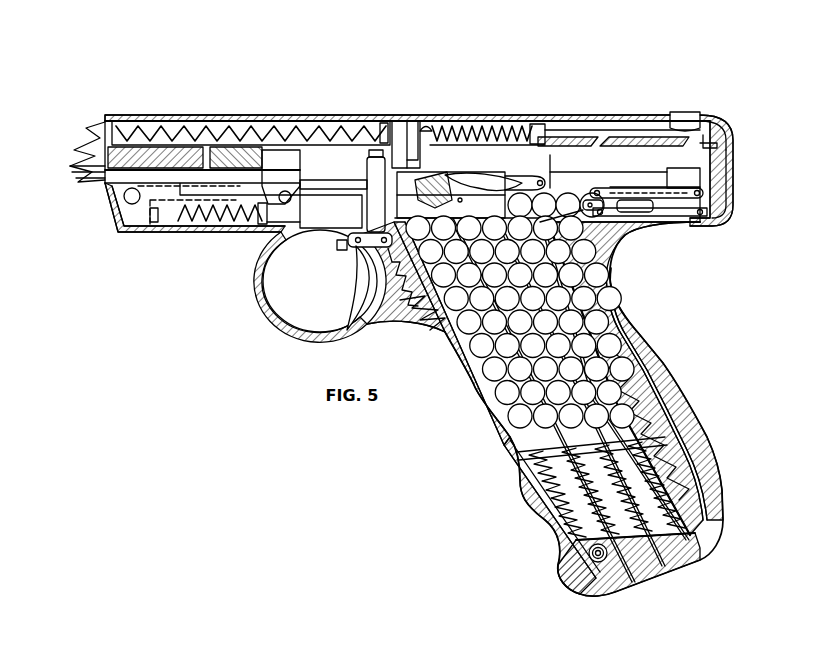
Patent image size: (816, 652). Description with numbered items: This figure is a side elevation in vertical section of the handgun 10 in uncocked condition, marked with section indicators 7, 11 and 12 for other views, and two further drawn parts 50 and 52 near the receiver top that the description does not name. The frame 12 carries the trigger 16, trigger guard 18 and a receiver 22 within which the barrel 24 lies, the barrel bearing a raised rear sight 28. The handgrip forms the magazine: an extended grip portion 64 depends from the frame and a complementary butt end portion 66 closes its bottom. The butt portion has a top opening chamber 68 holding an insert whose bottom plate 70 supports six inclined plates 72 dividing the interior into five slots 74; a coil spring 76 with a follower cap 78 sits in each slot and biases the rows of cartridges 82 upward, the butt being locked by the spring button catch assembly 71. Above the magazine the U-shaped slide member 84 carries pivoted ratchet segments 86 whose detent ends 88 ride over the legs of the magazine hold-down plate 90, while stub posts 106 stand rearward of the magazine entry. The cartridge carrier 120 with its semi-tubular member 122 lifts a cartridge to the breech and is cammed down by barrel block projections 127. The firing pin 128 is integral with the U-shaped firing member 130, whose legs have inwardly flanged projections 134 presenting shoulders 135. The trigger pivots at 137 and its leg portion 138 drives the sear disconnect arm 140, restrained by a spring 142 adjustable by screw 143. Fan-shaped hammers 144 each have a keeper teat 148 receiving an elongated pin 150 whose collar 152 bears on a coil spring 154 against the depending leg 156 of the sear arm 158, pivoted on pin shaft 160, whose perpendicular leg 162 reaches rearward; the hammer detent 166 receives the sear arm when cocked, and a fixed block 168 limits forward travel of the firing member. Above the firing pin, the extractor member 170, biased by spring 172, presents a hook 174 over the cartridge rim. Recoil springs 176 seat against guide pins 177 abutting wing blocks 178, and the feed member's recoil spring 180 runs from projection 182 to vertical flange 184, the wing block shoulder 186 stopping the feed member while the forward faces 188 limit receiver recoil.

The section line 7 is at (500, 78).
The handgun 10 is at (226, 78).
The section line 11 is at (347, 78).
The frame 12 is at (680, 78).
The trigger 16 is at (356, 286).
The trigger guard 18 is at (281, 334).
The receiver 22 is at (165, 115).
The barrel 24 is at (78, 161).
The rear sight 28 is at (600, 131).
The rear sight block 50 is at (683, 122).
The hatched guide strip 52 is at (612, 140).
The extended grip portion 64 is at (618, 324).
The butt end portion 66 is at (708, 445).
The top opening chamber 68 is at (675, 419).
The bottom plate 70 is at (660, 536).
The spring button catch assembly 71 is at (588, 558).
The plates 72 is at (636, 541).
The slots 74 is at (641, 359).
The coil spring 76 is at (656, 378).
The follower cap 78 is at (540, 448).
The cartridges 82 is at (570, 289).
The slide member 84 is at (473, 183).
The ratchet segments 86 is at (442, 178).
The detent end 88 is at (478, 188).
The magazine hold-down plate 90 is at (540, 233).
The stub posts 106 is at (628, 212).
The cartridge carrier 120 is at (710, 210).
The semi-tubular member 122 is at (697, 200).
The barrel block projections 127 is at (667, 180).
The firing pin 128 is at (667, 170).
The firing member 130 is at (732, 157).
The inwardly flanged projection 134 is at (262, 165).
The shoulder 135 is at (275, 140).
The trigger pivot 137 is at (350, 241).
The leg portion 138 is at (374, 254).
The sear disconnect arm 140 is at (368, 185).
The spring 142 is at (395, 320).
The screw 143 is at (426, 330).
The hammers 144 is at (281, 177).
The keeper teat 148 is at (300, 222).
The elongated pin 150 is at (283, 205).
The collar 152 is at (258, 215).
The coil spring 154 is at (240, 226).
The depending leg 156 is at (140, 231).
The sear arm 158 is at (122, 207).
The pin shaft 160 is at (124, 197).
The perpendicular leg 162 is at (207, 178).
The detent 166 is at (215, 140).
The fixed block 168 is at (98, 140).
The extractor member 170 is at (734, 137).
The spring 172 is at (722, 122).
The hook 174 is at (704, 146).
The recoil springs 176 is at (300, 132).
The guide pin 177 is at (337, 132).
The wing block 178 is at (392, 126).
The recoil spring 180 is at (487, 125).
The projection 182 is at (562, 137).
The vertical flange 184 is at (426, 125).
The shoulder 186 is at (412, 130).
The faces 188 is at (369, 158).